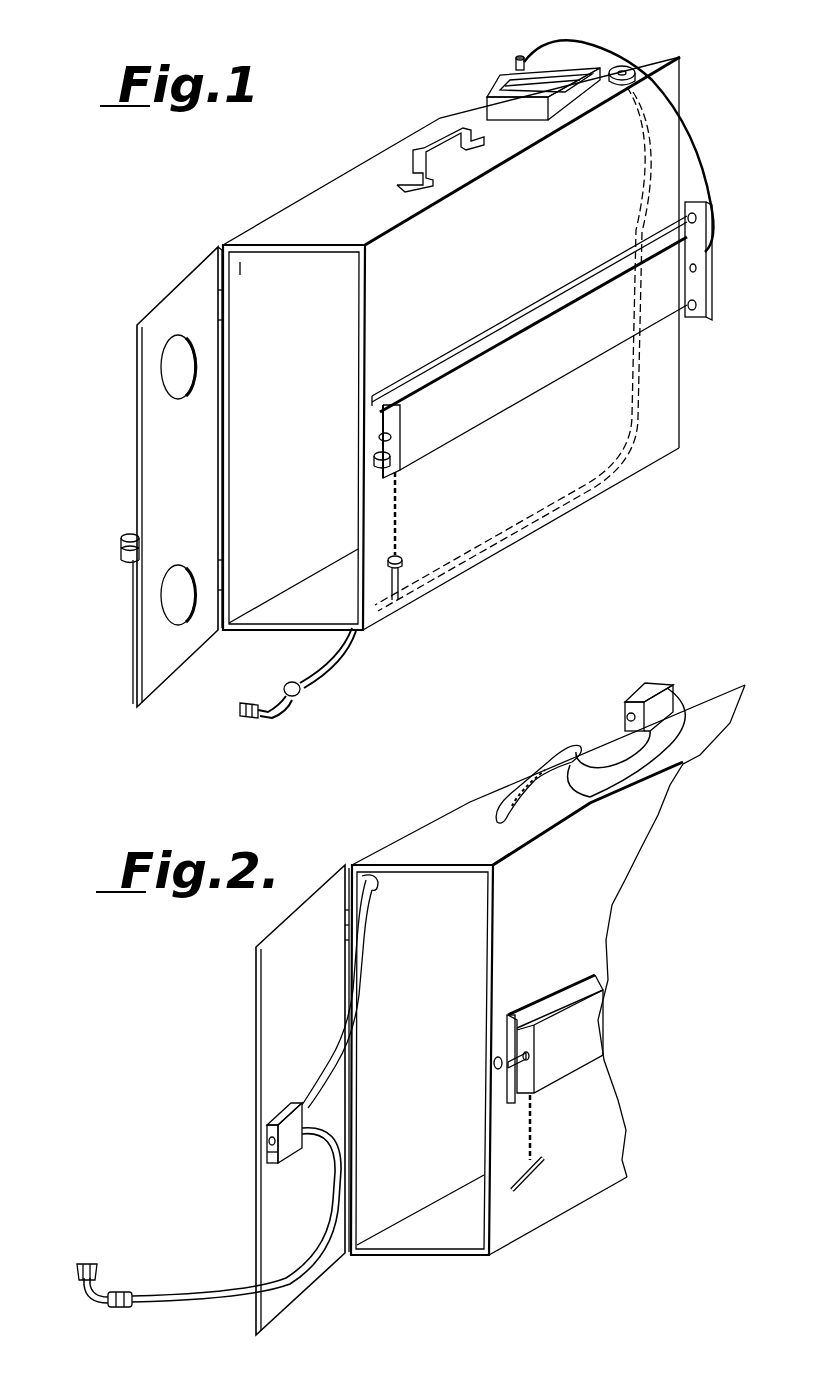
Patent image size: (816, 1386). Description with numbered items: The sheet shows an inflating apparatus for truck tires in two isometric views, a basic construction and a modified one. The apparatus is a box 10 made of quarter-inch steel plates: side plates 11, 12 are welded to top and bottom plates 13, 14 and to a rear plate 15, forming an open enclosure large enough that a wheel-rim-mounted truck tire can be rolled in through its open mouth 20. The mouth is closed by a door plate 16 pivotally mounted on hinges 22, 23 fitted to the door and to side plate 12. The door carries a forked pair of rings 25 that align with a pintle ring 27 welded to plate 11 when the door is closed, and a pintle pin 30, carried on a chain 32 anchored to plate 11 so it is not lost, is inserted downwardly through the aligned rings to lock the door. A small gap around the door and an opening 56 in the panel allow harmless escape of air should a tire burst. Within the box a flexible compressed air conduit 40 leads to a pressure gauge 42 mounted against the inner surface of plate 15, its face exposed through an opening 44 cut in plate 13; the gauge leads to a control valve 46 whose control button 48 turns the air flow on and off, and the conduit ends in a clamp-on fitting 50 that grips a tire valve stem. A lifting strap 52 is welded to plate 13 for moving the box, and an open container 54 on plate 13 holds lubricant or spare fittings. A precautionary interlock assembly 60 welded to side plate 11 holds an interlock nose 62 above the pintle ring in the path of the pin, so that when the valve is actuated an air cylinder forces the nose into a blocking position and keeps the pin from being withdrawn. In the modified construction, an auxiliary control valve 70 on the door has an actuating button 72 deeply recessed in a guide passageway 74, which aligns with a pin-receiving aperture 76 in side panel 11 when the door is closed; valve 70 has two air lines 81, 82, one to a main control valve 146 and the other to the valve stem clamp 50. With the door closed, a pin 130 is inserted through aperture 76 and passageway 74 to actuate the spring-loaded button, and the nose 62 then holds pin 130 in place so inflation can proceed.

In FIG. 1, the box 10 is at (457, 343).
In FIG. 1, the side plate 11 is at (501, 485).
In FIG. 2, the side plate 11 is at (603, 1135).
In FIG. 1, the side plate 12 is at (297, 340).
In FIG. 1, the top plate 13 is at (359, 220).
In FIG. 1, the bottom plate 14 is at (327, 615).
In FIG. 1, the rear plate 15 is at (681, 362).
In FIG. 1, the door plate 16 is at (191, 515).
In FIG. 2, the door plate 16 is at (302, 1100).
In FIG. 1, the open mouth 20 is at (240, 267).
In FIG. 1, the hinge 22 is at (216, 296).
In FIG. 1, the hinge 23 is at (218, 590).
In FIG. 1, the forked pair of rings 25 is at (126, 533).
In FIG. 1, the pintle ring 27 is at (376, 464).
In FIG. 1, the pintle pin 30 is at (400, 588).
In FIG. 1, the chain 32 is at (400, 540).
In FIG. 1, the flexible compressed air conduit 40 is at (328, 648).
In FIG. 1, the pressure gauge 42 is at (648, 50).
In FIG. 1, the opening 44 is at (658, 72).
In FIG. 1, the control valve 46 is at (518, 72).
In FIG. 1, the control button 48 is at (524, 66).
In FIG. 1, the clamp-on fitting 50 is at (246, 716).
In FIG. 2, the clamp-on fitting 50 is at (98, 1275).
In FIG. 1, the lifting strap 52 is at (440, 145).
In FIG. 1, the open container 54 is at (500, 108).
In FIG. 1, the opening 56 is at (189, 607).
In FIG. 1, the interlock assembly 60 is at (422, 415).
In FIG. 2, the interlock assembly 60 is at (562, 1000).
In FIG. 1, the interlock nose 62 is at (391, 400).
In FIG. 2, the interlock nose 62 is at (510, 1020).
In FIG. 2, the auxiliary control valve 70 is at (292, 1145).
In FIG. 2, the actuating button 72 is at (269, 1138).
In FIG. 2, the guide passageway 74 is at (270, 1158).
In FIG. 2, the pin-receiving aperture 76 is at (494, 1060).
In FIG. 2, the air line 81 is at (330, 1044).
In FIG. 2, the air line 82 is at (341, 1172).
In FIG. 2, the pin 130 is at (535, 1172).
In FIG. 2, the main control valve 146 is at (645, 690).